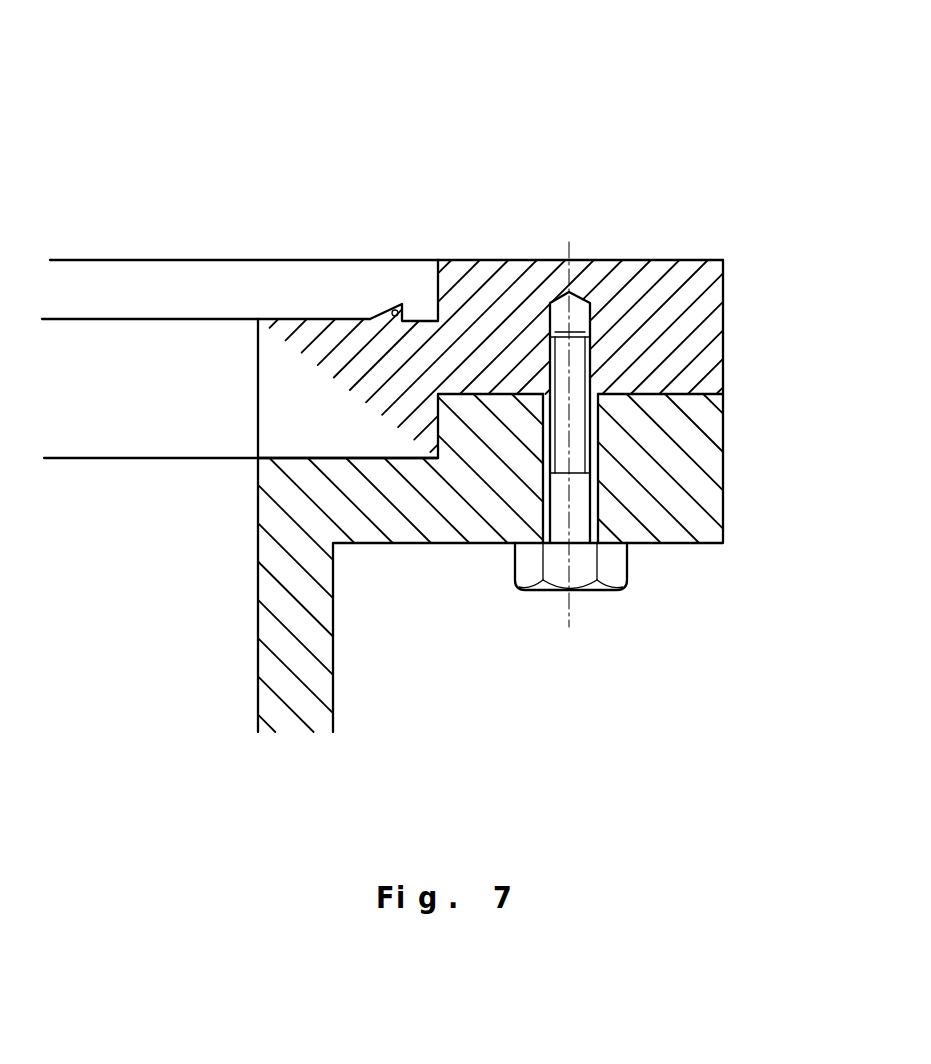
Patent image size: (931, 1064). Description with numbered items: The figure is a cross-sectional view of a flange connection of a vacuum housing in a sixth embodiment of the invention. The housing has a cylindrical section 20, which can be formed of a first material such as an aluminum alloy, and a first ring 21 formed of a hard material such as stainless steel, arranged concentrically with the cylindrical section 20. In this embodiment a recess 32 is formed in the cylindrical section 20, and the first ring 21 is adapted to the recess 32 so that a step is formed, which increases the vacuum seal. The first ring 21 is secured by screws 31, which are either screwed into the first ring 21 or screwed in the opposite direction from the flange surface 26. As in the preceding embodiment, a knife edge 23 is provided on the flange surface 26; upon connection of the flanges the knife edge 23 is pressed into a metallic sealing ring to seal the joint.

The cylindrical section 20 is at (295, 655).
The first ring 21 is at (697, 342).
The knife edge 23 is at (396, 309).
The flange surface 26 is at (660, 257).
The screws 31 is at (609, 568).
The recess 32 is at (242, 512).